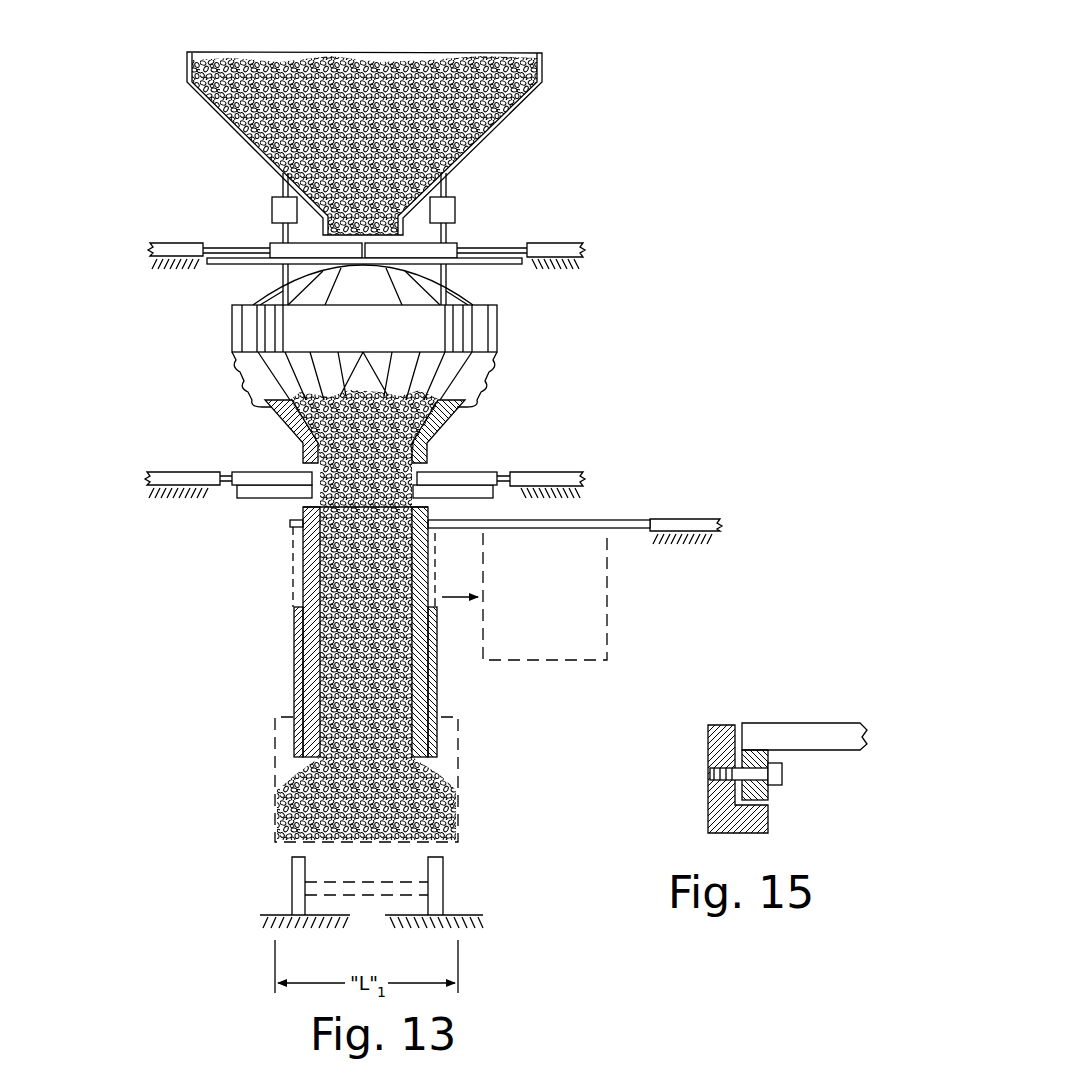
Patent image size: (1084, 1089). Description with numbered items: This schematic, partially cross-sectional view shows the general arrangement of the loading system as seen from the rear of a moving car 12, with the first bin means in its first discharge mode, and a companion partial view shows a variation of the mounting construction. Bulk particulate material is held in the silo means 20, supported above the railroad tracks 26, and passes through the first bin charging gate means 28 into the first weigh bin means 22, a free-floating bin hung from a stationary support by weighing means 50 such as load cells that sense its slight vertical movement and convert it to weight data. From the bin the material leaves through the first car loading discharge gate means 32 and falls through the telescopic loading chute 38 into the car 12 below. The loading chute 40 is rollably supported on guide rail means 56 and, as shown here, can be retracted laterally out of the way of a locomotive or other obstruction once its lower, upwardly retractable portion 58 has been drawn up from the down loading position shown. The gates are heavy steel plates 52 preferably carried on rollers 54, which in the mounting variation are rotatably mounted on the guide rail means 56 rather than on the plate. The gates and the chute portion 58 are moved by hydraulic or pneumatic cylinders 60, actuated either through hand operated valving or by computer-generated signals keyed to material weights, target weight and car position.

In FIG. 13, the moving car 12 is at (272, 758).
In FIG. 13, the silo means 20 is at (556, 61).
In FIG. 13, the first weigh bin means 22 is at (505, 382).
In FIG. 13, the railroad tracks 26 is at (297, 912).
In FIG. 13, the first bin charging gate means 28 is at (450, 243).
In FIG. 13, the first car loading discharge gate means 32 is at (465, 471).
In FIG. 13, the telescopic loading chute 38 is at (253, 548).
In FIG. 13, the telescopic loading chute 40 is at (600, 612).
In FIG. 13, the weighing means 50 is at (271, 207).
In FIG. 15, the heavy steel plates 52 is at (776, 735).
In FIG. 15, the rollers 54 is at (764, 795).
In FIG. 13, the guide rail means 56 is at (505, 265).
In FIG. 15, the guide rail means 56 is at (709, 750).
In FIG. 13, the lower upwardly retractable chute portion 58 is at (296, 637).
In FIG. 13, the hydraulic or pneumatic cylinders 60 is at (160, 246).